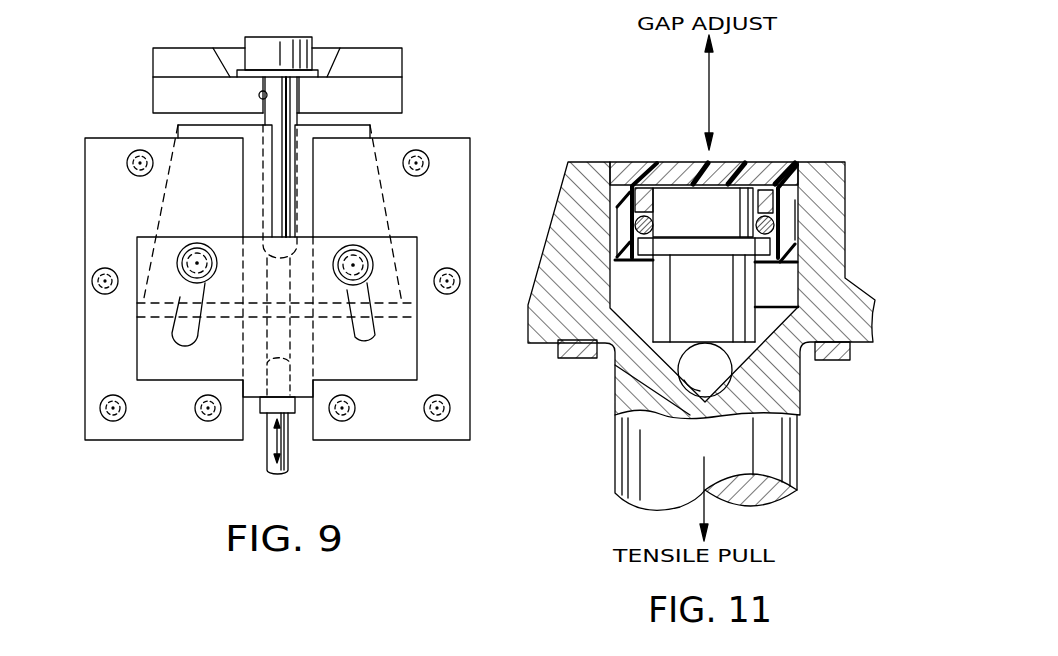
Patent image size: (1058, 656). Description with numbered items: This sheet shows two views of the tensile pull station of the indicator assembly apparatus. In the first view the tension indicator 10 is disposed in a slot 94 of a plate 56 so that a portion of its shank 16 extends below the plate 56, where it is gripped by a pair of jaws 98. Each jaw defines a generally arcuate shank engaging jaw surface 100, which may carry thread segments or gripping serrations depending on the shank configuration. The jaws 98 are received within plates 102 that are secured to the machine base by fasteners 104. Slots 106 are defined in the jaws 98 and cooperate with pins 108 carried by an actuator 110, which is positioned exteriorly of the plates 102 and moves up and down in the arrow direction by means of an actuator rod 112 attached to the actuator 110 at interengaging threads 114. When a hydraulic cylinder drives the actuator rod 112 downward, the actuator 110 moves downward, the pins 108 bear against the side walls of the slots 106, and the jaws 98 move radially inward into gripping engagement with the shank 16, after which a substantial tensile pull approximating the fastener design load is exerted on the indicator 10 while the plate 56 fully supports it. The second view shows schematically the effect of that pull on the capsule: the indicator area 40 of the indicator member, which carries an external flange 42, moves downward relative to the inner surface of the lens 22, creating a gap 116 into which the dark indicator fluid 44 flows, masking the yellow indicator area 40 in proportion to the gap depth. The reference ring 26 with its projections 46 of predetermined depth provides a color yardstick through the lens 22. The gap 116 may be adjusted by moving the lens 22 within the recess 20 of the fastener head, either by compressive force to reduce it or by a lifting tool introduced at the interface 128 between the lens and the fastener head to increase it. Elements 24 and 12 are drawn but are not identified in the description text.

In FIG. 9, the indicator 10 is at (320, 35).
In FIG. 9, the plate 56 is at (163, 93).
In FIG. 9, the slot 94 is at (259, 95).
In FIG. 9, the shank 16 is at (280, 128).
In FIG. 9, the jaw surfaces 100 is at (264, 202).
In FIG. 9, the jaws 98 is at (190, 185).
In FIG. 9, the plates 102 is at (113, 360).
In FIG. 9, the fasteners 104 is at (91, 283).
In FIG. 9, the actuator 110 is at (227, 293).
In FIG. 9, the pins 108 is at (192, 262).
In FIG. 9, the slots 106 is at (185, 300).
In FIG. 9, the interengaging threads 114 is at (292, 362).
In FIG. 9, the actuator rod 112 is at (289, 455).
In FIG. 11, the recess 20 is at (615, 278).
In FIG. 11, the lens 22 is at (685, 180).
In FIG. 11, the fluid 44 is at (660, 178).
In FIG. 11, the gap 116 is at (713, 182).
In FIG. 11, the projections 46 is at (770, 186).
In FIG. 11, the interface 128 is at (800, 165).
In FIG. 11, the bearing 24 is at (625, 210).
In FIG. 11, the reference ring 26 is at (770, 210).
In FIG. 11, the indicator area 40 is at (737, 188).
In FIG. 11, the external flange 42 is at (625, 247).
In FIG. 11, the pull shaft 12 is at (606, 436).